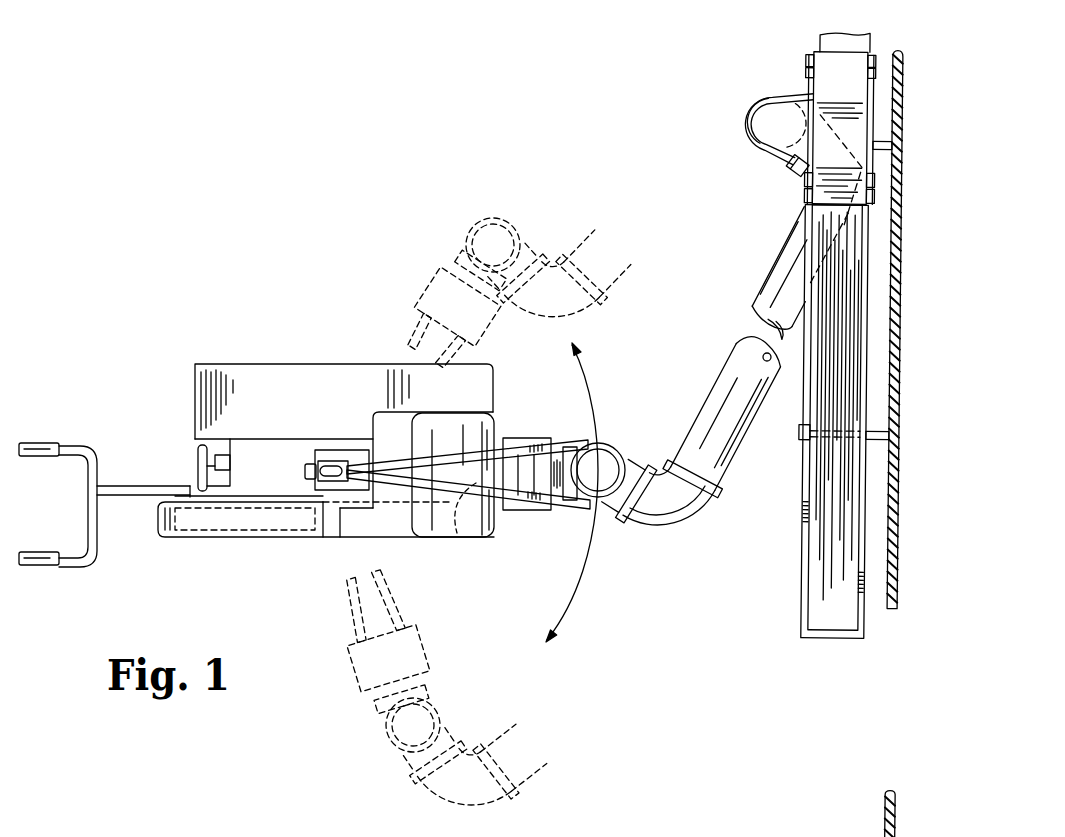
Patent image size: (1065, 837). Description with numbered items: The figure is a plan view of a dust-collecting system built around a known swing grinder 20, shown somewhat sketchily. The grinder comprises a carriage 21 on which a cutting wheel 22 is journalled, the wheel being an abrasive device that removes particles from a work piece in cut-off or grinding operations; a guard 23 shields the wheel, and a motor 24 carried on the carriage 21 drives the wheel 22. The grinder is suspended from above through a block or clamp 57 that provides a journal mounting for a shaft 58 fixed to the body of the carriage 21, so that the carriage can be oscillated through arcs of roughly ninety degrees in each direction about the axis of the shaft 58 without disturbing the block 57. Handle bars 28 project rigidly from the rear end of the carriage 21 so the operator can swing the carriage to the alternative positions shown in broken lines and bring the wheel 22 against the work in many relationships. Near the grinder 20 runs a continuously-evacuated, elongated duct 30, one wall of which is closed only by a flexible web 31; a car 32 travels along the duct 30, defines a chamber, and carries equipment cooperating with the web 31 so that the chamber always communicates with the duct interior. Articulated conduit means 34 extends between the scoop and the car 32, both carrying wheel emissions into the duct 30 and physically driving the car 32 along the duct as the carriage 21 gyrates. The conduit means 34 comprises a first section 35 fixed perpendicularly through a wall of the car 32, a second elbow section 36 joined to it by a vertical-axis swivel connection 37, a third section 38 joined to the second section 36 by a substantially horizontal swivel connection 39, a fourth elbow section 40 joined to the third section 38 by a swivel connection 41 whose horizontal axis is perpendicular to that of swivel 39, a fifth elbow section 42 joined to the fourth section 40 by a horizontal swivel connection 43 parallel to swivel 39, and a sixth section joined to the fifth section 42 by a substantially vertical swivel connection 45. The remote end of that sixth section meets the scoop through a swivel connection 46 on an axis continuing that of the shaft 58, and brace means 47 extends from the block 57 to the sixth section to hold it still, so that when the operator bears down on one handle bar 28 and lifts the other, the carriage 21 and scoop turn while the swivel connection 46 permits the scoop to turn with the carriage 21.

The swing grinder 20 is at (240, 322).
The carriage 21 is at (310, 380).
The cutting wheel 22 is at (279, 520).
The guard 23 is at (223, 538).
The motor 24 is at (445, 420).
The handle bars 28 is at (40, 550).
The duct 30 is at (805, 487).
The flexible web 31 is at (818, 535).
The car 32 is at (848, 81).
The conduit means 34 is at (703, 306).
The first section 35 is at (795, 93).
The second section 36 is at (786, 165).
The swivel connection 37 is at (752, 104).
The third section 38 is at (716, 392).
The swivel connection 39 is at (804, 208).
The fourth elbow section 40 is at (671, 522).
The swivel connection 41 is at (718, 494).
The fifth elbow section 42 is at (631, 470).
The swivel connection 43 is at (627, 520).
The swivel connection 45 is at (610, 447).
The swivel connection 46 is at (568, 442).
The brace means 47 is at (516, 450).
The block 57 is at (339, 455).
The shaft 58 is at (308, 468).